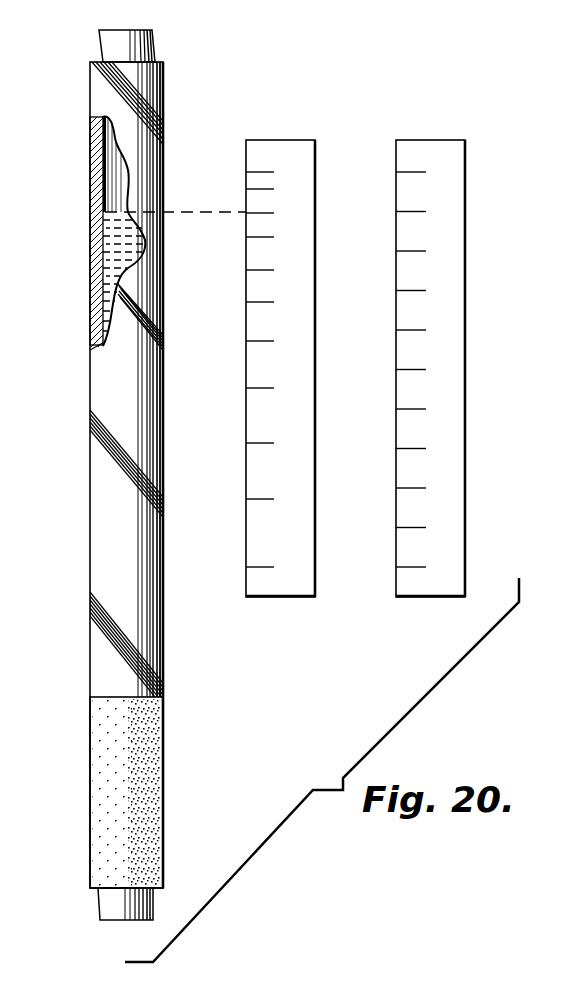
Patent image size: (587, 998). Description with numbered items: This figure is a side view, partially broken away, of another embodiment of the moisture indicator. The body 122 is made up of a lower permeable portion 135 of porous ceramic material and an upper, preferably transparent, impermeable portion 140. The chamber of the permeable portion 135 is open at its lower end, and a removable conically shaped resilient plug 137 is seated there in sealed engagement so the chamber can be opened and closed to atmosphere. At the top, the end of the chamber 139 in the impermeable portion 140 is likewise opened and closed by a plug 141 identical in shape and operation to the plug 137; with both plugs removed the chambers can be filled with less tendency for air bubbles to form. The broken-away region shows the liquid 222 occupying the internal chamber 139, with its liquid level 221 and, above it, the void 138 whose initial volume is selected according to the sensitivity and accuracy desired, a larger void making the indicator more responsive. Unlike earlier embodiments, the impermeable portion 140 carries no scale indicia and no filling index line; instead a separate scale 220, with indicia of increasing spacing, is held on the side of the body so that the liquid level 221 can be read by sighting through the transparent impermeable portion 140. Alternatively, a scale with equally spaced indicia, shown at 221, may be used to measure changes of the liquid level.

The body means 122 is at (166, 520).
The permeable portion 135 is at (143, 752).
The removable conically shaped resilient plug 137 is at (113, 903).
The void 138 is at (108, 145).
The chamber 139 is at (116, 175).
The impermeable portion 140 is at (140, 392).
The plug 141 is at (143, 44).
The scale 220 is at (300, 140).
The liquid level 221 is at (447, 140).
The liquid 222 is at (118, 270).